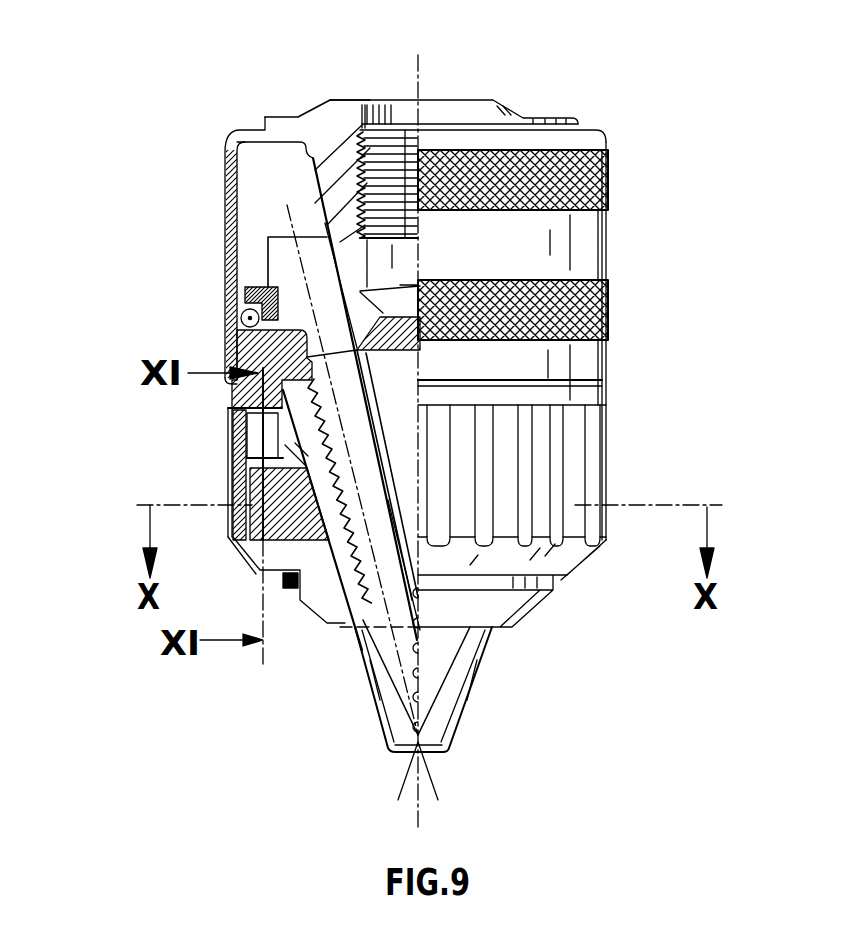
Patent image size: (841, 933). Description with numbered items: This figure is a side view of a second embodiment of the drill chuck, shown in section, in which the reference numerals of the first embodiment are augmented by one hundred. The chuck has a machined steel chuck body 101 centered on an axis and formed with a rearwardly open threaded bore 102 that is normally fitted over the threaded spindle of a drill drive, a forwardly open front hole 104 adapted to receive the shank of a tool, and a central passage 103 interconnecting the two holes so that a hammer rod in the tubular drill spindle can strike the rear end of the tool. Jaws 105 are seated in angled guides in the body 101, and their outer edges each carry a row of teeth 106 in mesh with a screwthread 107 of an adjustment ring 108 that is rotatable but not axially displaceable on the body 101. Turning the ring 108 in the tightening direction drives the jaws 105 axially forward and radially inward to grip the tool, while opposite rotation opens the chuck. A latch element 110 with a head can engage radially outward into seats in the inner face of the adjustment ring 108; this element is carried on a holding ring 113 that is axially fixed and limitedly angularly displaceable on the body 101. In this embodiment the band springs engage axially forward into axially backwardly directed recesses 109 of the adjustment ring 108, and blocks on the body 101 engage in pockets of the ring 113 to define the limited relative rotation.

The chuck body 101 is at (332, 132).
The threaded bore 102 is at (400, 147).
The central passage 103 is at (418, 280).
The front hole 104 is at (398, 378).
The jaws 105 is at (382, 748).
The teeth 106 is at (350, 570).
The screwthread 107 is at (400, 300).
The adjustment ring 108 is at (225, 318).
The recesses 109 is at (238, 408).
The latch element 110 is at (247, 440).
The holding ring 113 is at (245, 485).